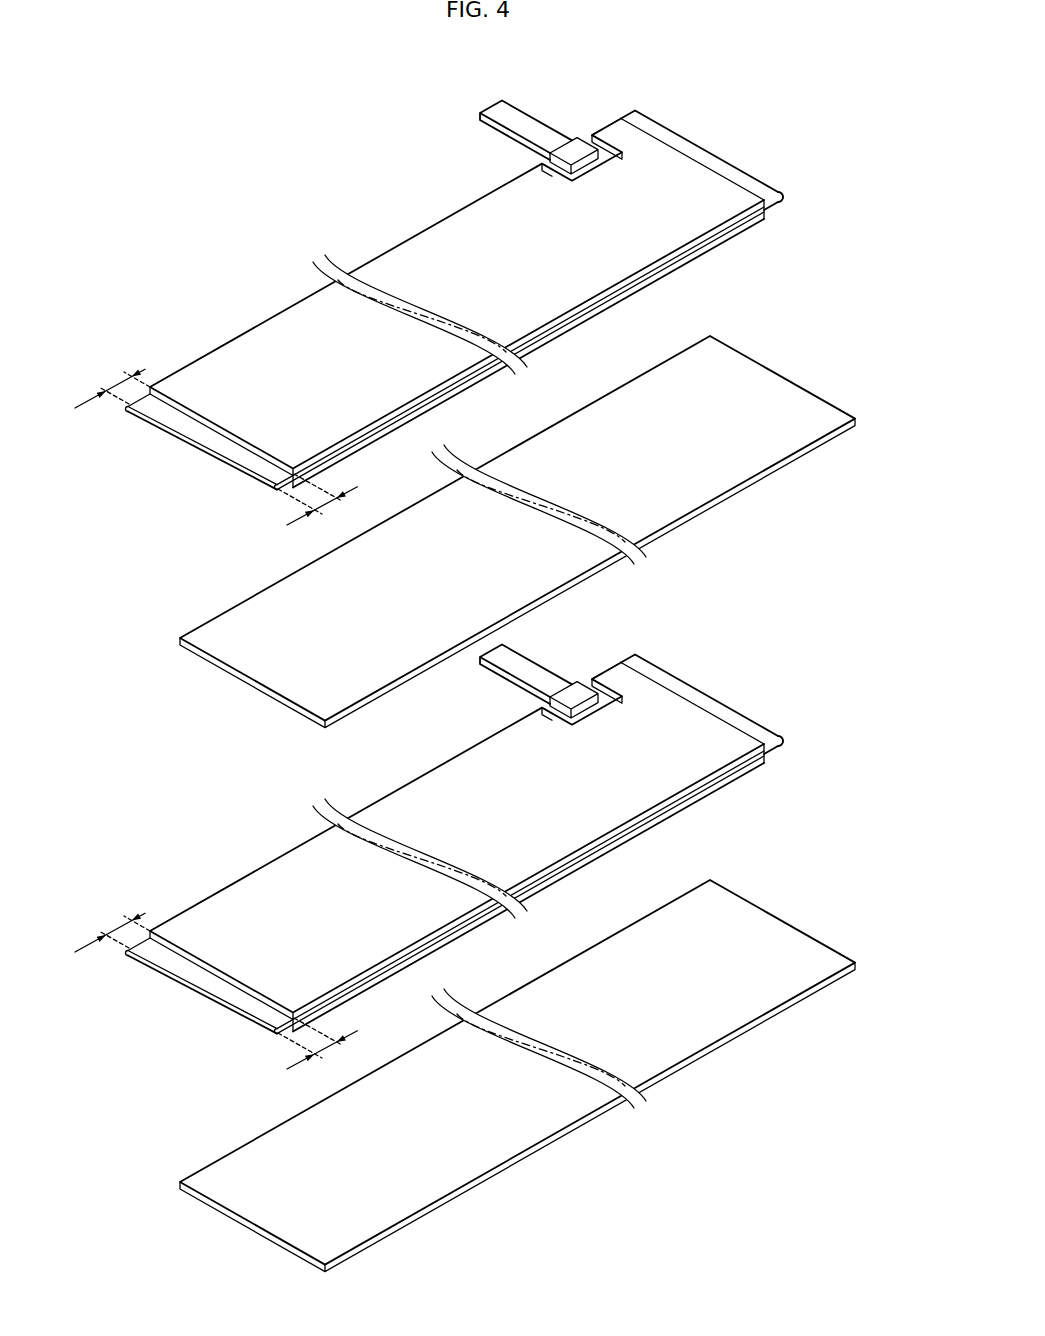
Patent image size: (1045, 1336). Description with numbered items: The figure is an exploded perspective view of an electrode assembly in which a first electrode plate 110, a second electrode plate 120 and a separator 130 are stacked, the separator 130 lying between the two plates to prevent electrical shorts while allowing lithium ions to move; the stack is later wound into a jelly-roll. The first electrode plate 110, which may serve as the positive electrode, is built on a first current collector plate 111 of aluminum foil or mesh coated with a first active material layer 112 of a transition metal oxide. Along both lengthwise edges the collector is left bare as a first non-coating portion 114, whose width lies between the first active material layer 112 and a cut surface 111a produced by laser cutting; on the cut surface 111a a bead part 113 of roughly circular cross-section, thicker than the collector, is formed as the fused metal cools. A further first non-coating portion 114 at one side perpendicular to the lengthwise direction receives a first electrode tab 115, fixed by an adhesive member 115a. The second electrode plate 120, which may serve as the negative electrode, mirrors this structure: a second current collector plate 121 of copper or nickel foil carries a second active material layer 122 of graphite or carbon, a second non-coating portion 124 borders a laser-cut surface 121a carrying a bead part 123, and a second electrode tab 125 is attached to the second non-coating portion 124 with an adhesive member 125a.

The first electrode plate 110 is at (450, 305).
The first current collector plate 111 is at (727, 227).
The cut surface 111a is at (707, 147).
The first active material layer 112 is at (670, 266).
The bead part 113 is at (785, 199).
The first non-coating portion 114 is at (657, 137).
The first electrode tab 115 is at (520, 118).
The adhesive member 115a is at (568, 145).
The second electrode plate 120 is at (434, 857).
The second current collector plate 121 is at (525, 892).
The cut surface 121a is at (433, 845).
The second active material layer 122 is at (457, 847).
The bead part 123 is at (513, 919).
The second non-coating portion 124 is at (420, 809).
The second electrode tab 125 is at (556, 665).
The adhesive member 125a is at (591, 669).
The separator 130 is at (752, 446).